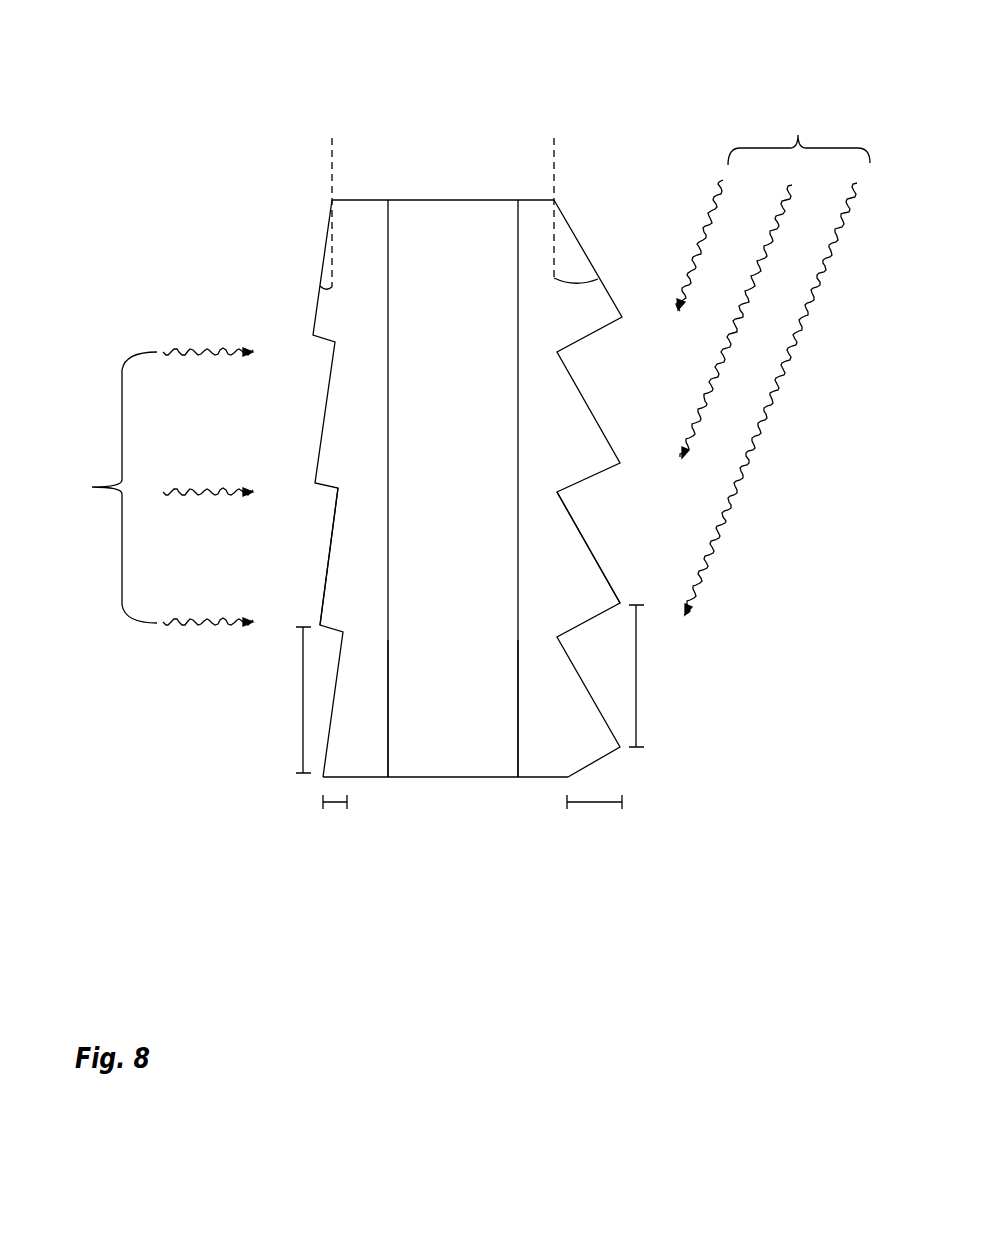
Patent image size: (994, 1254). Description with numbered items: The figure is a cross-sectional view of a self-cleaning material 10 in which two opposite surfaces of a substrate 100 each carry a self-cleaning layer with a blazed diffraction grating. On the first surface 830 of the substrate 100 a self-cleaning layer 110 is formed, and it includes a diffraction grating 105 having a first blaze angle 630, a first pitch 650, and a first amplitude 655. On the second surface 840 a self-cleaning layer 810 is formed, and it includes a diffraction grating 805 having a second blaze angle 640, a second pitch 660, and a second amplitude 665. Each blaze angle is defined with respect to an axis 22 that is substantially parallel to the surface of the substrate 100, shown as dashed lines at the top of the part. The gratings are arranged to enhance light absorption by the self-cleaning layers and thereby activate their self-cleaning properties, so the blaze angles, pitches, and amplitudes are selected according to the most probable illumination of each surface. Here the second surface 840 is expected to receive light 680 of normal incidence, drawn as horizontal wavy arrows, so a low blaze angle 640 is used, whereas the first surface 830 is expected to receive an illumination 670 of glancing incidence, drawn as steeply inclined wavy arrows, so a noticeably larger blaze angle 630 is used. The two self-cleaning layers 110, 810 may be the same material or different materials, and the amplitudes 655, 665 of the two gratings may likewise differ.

The self-cleaning material 10 is at (362, 125).
The axis 22 is at (331, 154).
The substrate 100 is at (438, 504).
The diffraction grating 105 is at (580, 530).
The self-cleaning layer 110 is at (538, 595).
The first blaze angle 630 is at (575, 291).
The second blaze angle 640 is at (331, 302).
The first pitch 650 is at (636, 680).
The first amplitude 655 is at (595, 806).
The second pitch 660 is at (303, 690).
The second amplitude 665 is at (337, 806).
The illumination 670 is at (798, 132).
The light 680 is at (88, 488).
The diffraction grating 805 is at (333, 525).
The self-cleaning layer 810 is at (340, 455).
The first surface 830 is at (519, 737).
The second surface 840 is at (388, 735).